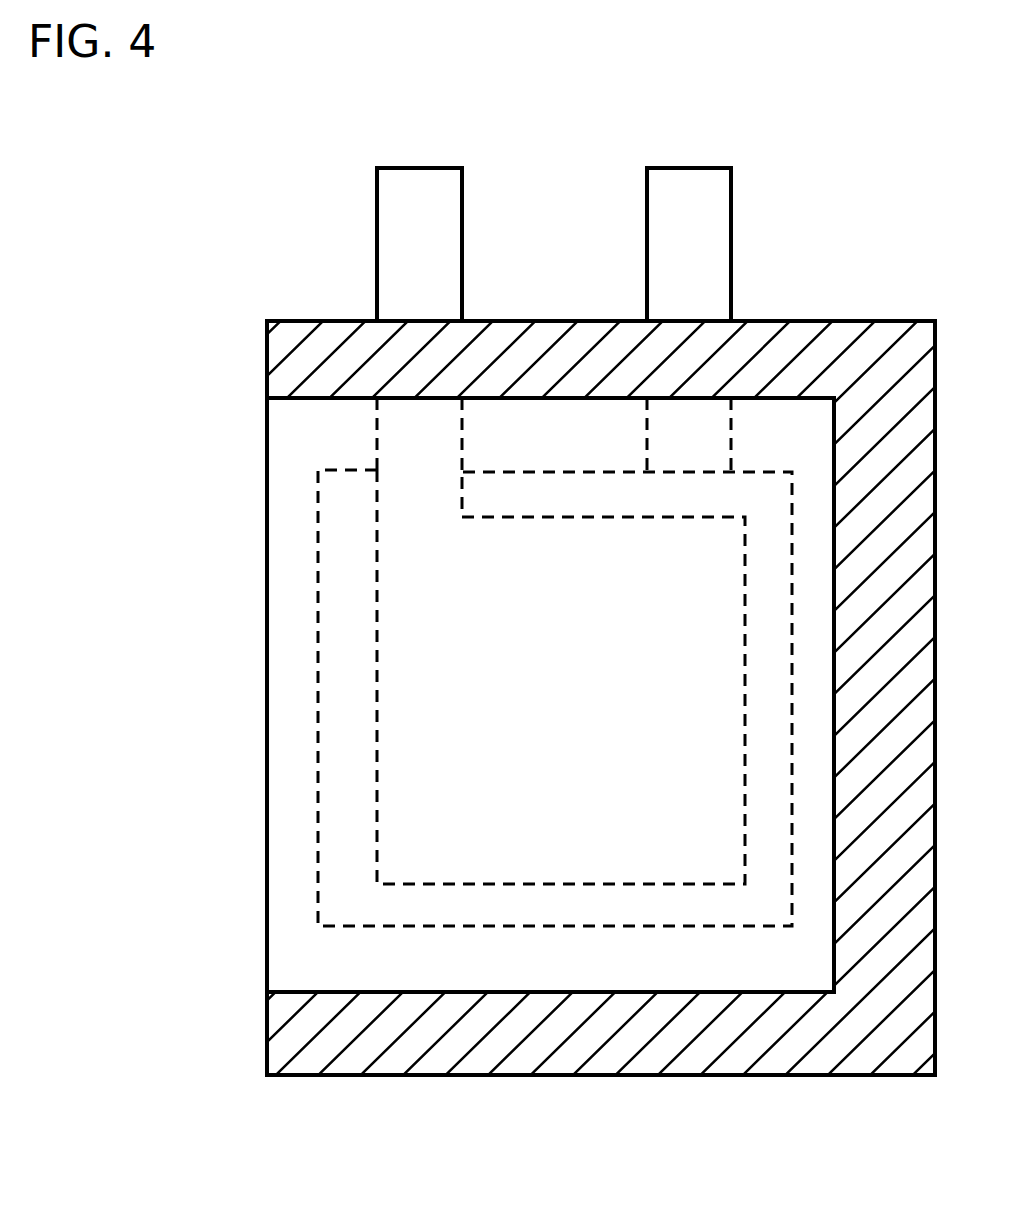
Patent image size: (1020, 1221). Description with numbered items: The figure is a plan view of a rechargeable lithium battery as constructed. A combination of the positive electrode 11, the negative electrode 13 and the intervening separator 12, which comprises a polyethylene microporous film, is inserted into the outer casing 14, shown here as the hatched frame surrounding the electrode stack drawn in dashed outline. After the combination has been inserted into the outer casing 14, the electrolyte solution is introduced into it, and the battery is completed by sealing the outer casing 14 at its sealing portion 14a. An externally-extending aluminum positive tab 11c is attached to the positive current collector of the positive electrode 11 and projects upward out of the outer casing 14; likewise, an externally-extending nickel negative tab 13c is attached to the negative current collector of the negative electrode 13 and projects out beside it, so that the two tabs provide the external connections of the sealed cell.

The positive electrode 11 is at (348, 813).
The positive tab 11c is at (398, 230).
The separator 12 is at (290, 632).
The negative electrode 13 is at (692, 320).
The negative tab 13c is at (665, 230).
The outer casing 14 is at (267, 487).
The sealing portion 14a is at (295, 363).